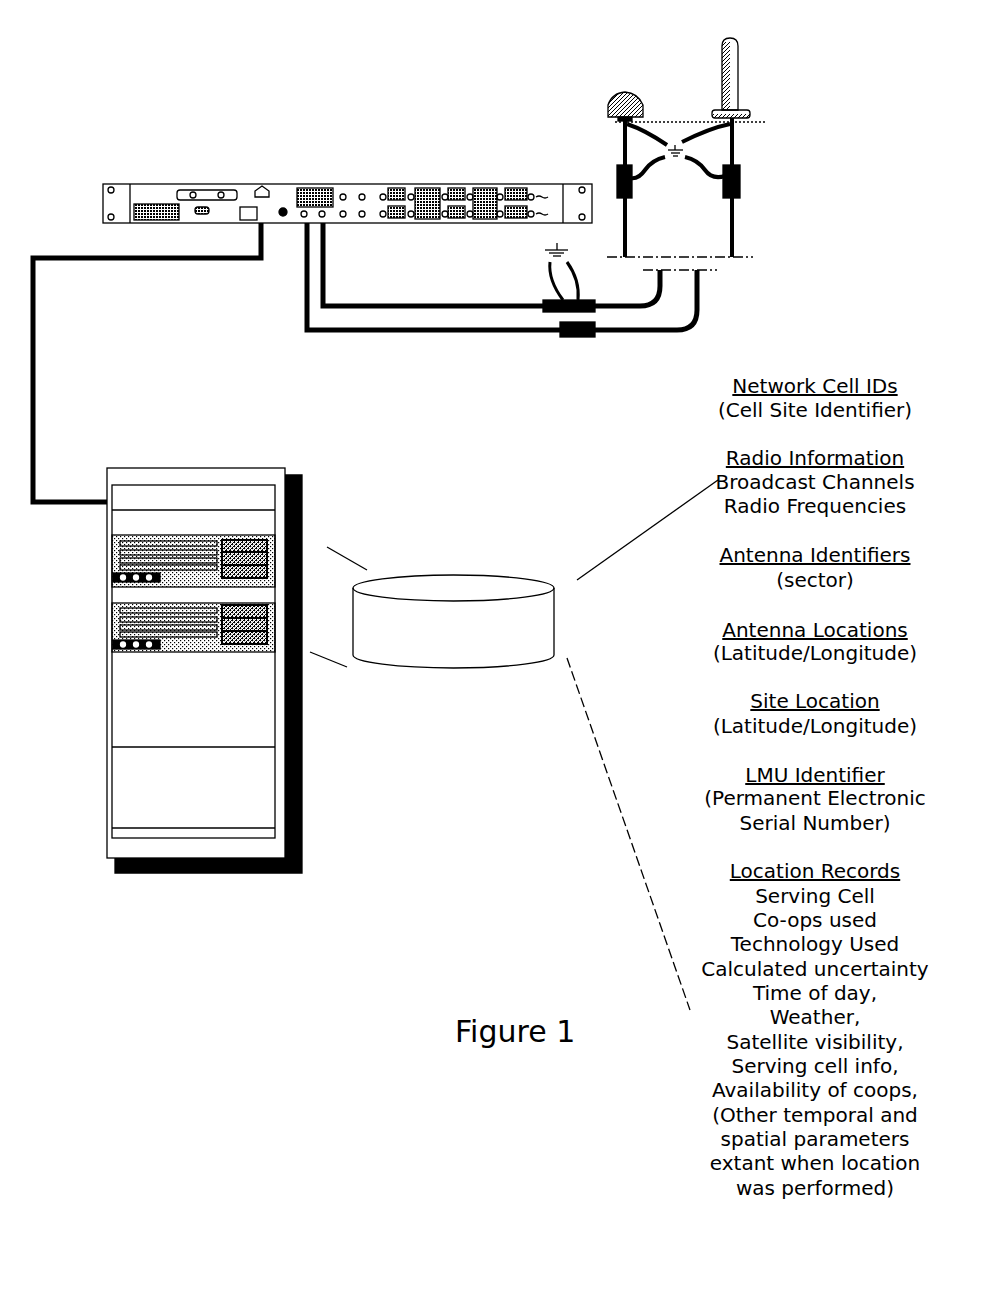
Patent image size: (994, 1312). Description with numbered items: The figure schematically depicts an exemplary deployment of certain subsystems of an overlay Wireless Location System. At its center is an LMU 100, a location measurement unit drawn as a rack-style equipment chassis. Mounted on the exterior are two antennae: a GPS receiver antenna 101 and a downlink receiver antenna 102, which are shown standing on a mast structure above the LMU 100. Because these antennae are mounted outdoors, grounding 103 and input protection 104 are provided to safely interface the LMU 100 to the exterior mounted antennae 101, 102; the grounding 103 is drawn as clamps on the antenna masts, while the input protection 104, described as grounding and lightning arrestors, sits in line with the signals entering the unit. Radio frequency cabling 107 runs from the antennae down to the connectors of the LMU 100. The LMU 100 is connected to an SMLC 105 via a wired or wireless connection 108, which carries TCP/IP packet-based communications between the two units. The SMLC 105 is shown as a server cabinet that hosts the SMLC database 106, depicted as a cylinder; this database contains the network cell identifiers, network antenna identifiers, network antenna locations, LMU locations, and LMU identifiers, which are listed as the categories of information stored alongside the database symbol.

The LMU 100 is at (255, 172).
The GPS receiver antenna 101 is at (605, 95).
The downlink receiver antenna 102 is at (745, 85).
The grounding 103 is at (622, 190).
The input protection 104 is at (577, 306).
The SMLC 105 is at (204, 646).
The SMLC database 106 is at (514, 745).
The radio frequency cabling 107 is at (502, 276).
The wired or wireless connection 108 is at (147, 362).